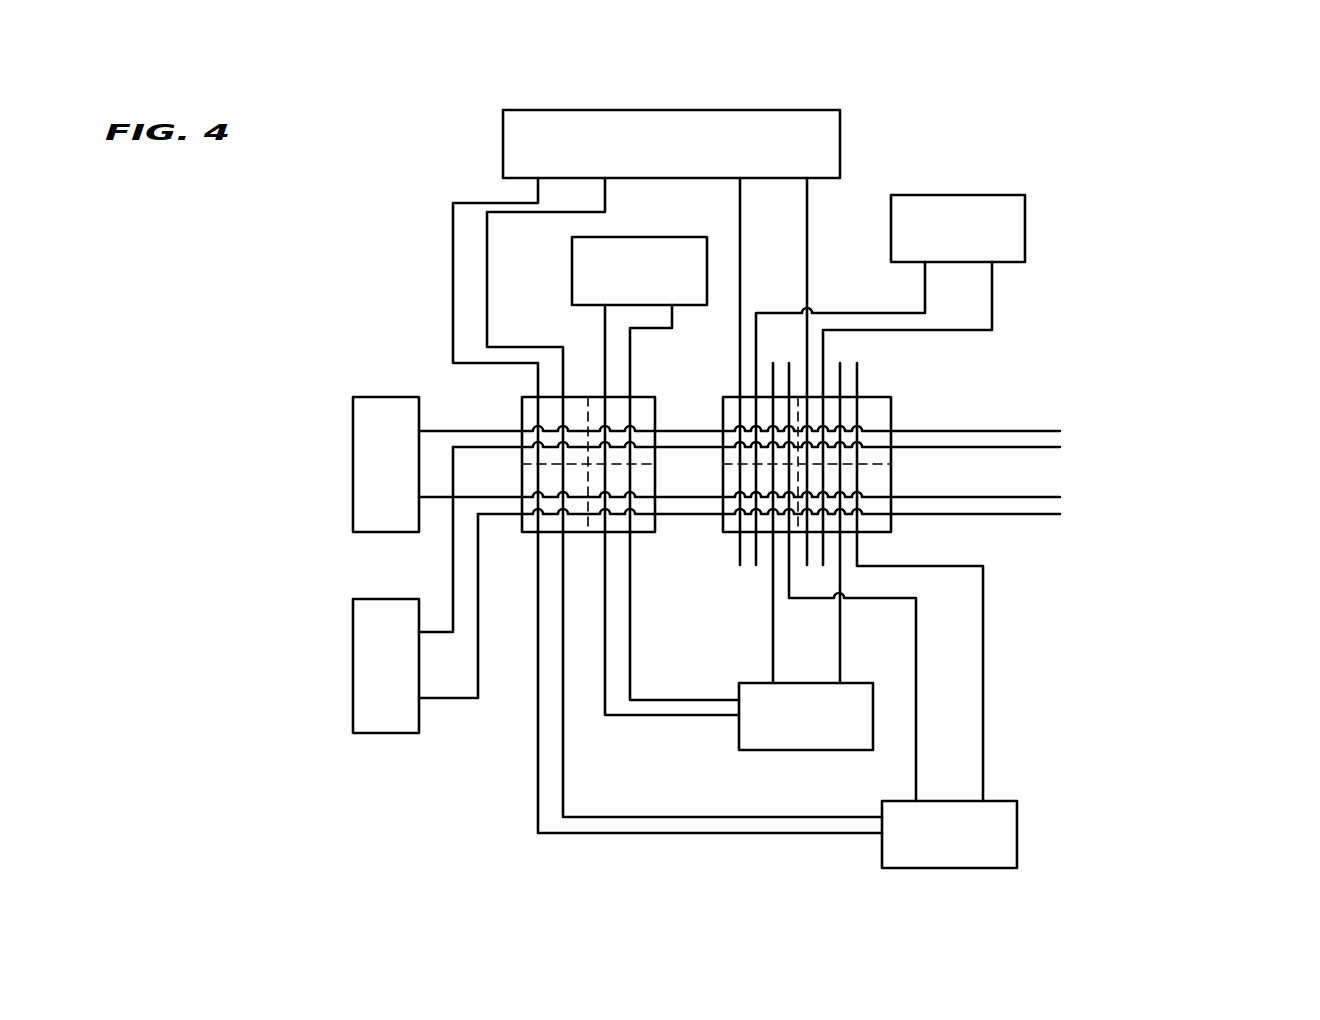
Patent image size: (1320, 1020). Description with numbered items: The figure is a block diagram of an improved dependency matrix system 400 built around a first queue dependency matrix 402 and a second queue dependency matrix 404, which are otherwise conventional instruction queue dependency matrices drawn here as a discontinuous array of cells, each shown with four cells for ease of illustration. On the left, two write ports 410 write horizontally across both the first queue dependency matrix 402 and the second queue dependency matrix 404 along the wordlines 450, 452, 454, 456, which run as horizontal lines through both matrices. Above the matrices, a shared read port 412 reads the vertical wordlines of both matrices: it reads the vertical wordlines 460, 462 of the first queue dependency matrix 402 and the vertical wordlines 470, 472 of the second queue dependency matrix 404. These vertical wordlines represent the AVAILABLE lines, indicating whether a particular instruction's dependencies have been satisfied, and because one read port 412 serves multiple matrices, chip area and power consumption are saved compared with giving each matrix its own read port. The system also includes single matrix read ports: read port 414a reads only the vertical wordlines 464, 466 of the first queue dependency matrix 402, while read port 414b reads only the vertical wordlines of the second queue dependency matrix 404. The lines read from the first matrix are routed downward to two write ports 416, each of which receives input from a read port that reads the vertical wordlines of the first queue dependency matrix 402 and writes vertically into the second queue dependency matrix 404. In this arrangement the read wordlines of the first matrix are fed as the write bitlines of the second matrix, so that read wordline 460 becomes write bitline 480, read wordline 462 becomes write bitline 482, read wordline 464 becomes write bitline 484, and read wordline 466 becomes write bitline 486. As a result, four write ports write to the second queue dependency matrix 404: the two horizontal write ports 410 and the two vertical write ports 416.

The dependency matrix system 400 is at (1210, 178).
The first queue dependency matrix 402 is at (648, 532).
The second queue dependency matrix 404 is at (891, 411).
The write port 410 is at (400, 397).
The read port 412 is at (503, 159).
The single matrix read port 414a is at (573, 264).
The single matrix read port 414b is at (1025, 228).
The write port 416 is at (778, 750).
The wordline 450 is at (450, 431).
The wordline 452 is at (466, 497).
The wordline 454 is at (982, 447).
The wordline 456 is at (1012, 514).
The vertical wordline 460 is at (452, 262).
The vertical wordline 462 is at (488, 288).
The vertical wordline 464 is at (605, 347).
The vertical wordline 466 is at (631, 370).
The vertical wordline 470 is at (741, 237).
The vertical wordline 472 is at (808, 240).
The write bitline 480 is at (917, 733).
The write bitline 482 is at (984, 733).
The write bitline 484 is at (774, 650).
The write bitline 486 is at (841, 650).